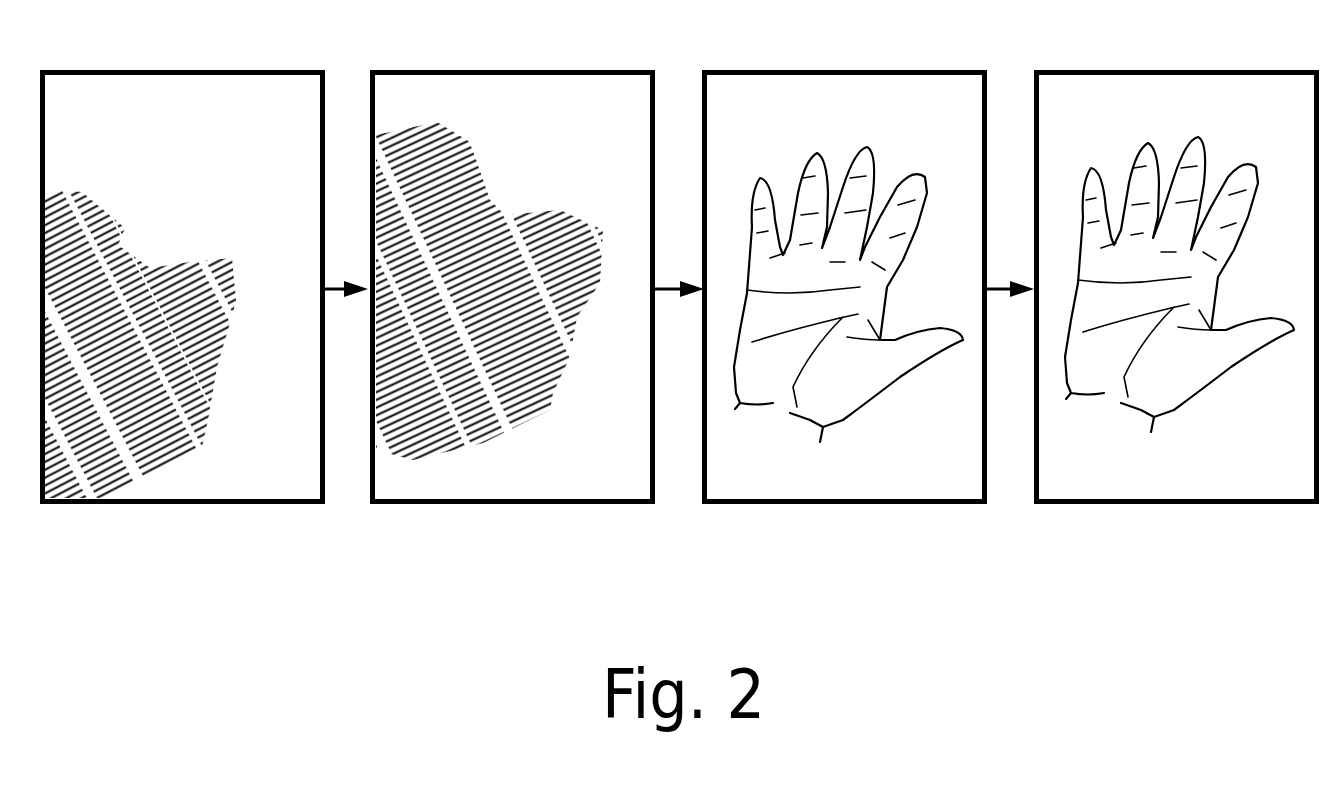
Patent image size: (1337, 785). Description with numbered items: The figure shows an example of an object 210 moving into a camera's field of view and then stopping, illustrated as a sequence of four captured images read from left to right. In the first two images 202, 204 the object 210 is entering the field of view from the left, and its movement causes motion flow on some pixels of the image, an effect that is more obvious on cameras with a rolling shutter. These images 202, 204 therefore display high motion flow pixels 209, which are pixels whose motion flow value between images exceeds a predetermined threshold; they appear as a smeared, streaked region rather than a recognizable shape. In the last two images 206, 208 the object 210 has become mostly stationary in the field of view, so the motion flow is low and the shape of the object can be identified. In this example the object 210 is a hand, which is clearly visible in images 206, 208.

The image 202 is at (178, 71).
The image 204 is at (458, 71).
The image 206 is at (812, 71).
The image 208 is at (1118, 71).
The high motion flow pixels 209 is at (93, 222).
The object 210 is at (817, 158).